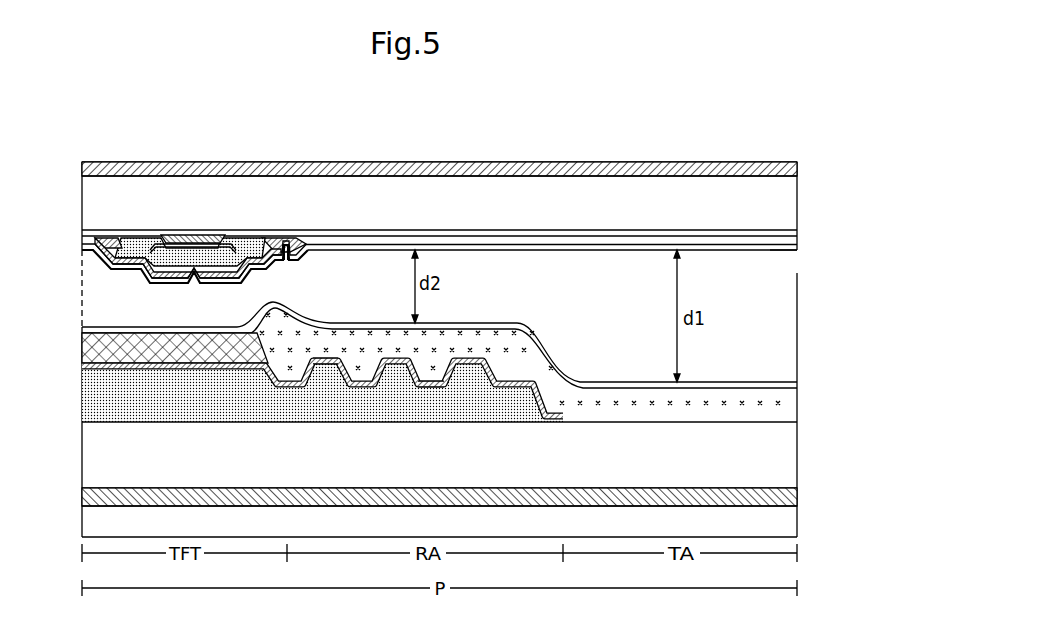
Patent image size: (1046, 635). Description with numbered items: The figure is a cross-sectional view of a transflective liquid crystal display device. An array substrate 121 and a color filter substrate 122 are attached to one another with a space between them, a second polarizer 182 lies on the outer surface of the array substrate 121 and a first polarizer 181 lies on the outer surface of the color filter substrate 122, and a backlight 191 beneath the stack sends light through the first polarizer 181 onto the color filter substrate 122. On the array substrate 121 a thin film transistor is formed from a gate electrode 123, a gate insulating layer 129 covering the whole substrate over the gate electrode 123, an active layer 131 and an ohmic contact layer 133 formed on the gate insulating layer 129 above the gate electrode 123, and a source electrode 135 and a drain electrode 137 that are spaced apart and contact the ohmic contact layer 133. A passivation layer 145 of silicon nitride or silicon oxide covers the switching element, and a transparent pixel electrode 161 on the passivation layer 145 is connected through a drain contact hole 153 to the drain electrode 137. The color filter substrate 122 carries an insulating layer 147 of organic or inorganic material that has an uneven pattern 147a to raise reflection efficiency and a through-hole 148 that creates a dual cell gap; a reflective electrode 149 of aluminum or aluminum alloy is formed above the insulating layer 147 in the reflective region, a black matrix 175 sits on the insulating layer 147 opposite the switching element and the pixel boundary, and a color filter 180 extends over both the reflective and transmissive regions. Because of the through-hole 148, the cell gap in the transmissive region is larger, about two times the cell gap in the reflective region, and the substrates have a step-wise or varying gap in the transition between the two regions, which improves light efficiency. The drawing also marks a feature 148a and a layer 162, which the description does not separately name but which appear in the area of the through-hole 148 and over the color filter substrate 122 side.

The array substrate 121 is at (482, 207).
The color filter substrate 122 is at (482, 465).
The gate electrode 123 is at (195, 235).
The gate insulating layer 129 is at (797, 236).
The active layer 131 is at (138, 242).
The ohmic contact layer 133 is at (219, 250).
The source electrode 135 is at (106, 243).
The drain electrode 137 is at (243, 250).
The passivation layer 145 is at (797, 243).
The insulating layer 147 is at (88, 397).
The uneven pattern 147a is at (337, 358).
The through-hole 148 is at (599, 360).
The groove 148a is at (441, 358).
The reflective electrode 149 is at (88, 364).
The drain contact hole 153 is at (287, 272).
The pixel electrode 161 is at (790, 253).
The alignment layer 162 is at (387, 323).
The black matrix 175 is at (152, 340).
The color filter 180 is at (717, 403).
The first polarizer 181 is at (793, 497).
The second polarizer 182 is at (797, 165).
The backlight 191 is at (797, 525).